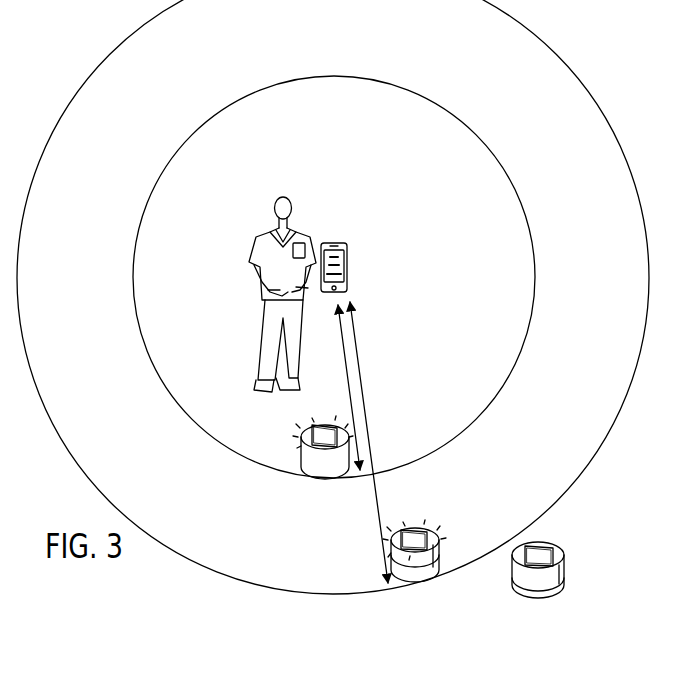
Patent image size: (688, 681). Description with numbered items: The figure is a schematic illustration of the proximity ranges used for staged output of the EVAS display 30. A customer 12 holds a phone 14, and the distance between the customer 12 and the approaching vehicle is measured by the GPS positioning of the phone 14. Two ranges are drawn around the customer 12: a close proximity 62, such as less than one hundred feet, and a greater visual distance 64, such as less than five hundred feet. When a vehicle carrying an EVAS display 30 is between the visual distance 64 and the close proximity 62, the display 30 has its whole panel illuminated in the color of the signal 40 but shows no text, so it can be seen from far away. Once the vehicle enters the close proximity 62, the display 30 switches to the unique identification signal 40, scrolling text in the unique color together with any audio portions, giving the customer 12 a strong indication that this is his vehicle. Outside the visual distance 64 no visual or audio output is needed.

The customer 12 is at (298, 275).
The phone 14 is at (353, 251).
The signal 40 is at (344, 266).
The EVAS display 30 is at (283, 428).
The close proximity 62 is at (347, 398).
The visual distance 64 is at (378, 505).